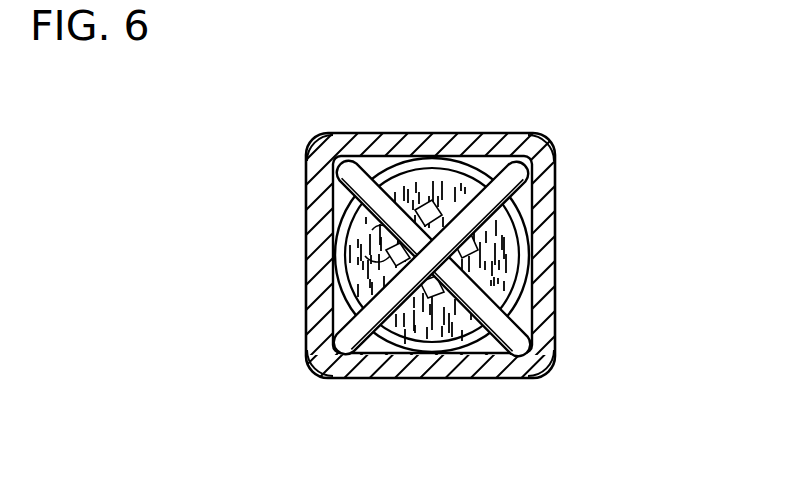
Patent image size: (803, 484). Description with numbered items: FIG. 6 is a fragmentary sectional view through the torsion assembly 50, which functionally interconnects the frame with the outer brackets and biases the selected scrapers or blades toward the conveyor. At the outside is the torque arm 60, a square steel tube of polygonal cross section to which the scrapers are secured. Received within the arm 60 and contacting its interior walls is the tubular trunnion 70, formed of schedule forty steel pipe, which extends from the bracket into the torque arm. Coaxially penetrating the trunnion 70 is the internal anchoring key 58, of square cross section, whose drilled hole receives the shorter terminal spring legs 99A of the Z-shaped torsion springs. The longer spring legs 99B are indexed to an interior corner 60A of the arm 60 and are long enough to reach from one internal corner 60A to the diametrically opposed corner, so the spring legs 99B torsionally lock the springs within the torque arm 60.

The torsion assembly 50 is at (562, 310).
The internal anchoring key 58 is at (333, 302).
The torque arm 60 is at (543, 270).
The interior corner 60A is at (326, 133).
The tubular trunnion 70 is at (520, 216).
The spring leg 99A is at (438, 200).
The spring leg 99B is at (380, 158).